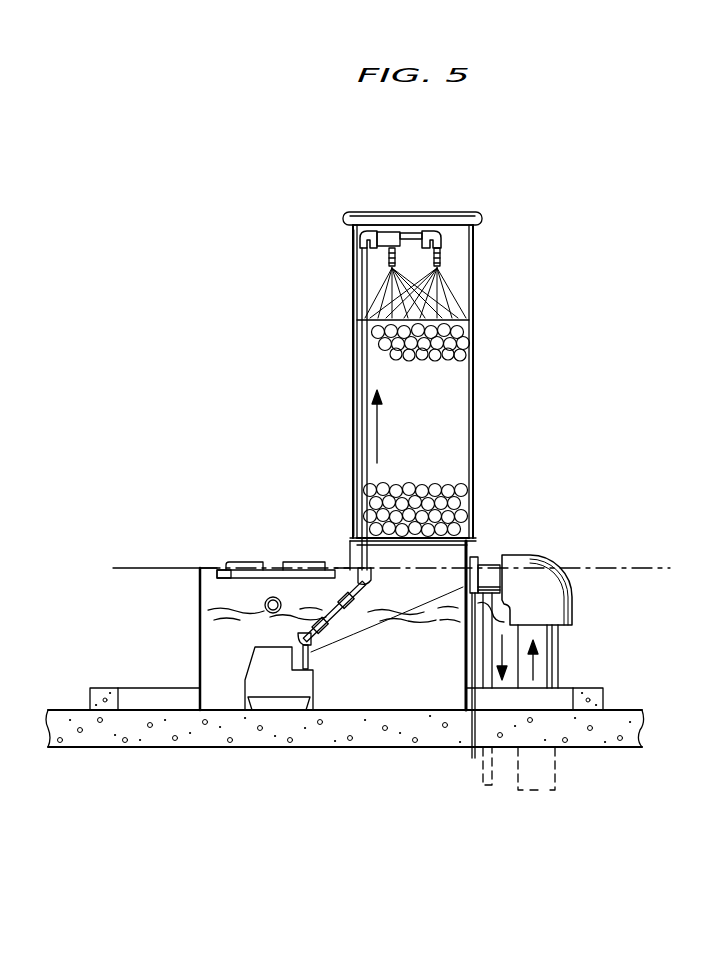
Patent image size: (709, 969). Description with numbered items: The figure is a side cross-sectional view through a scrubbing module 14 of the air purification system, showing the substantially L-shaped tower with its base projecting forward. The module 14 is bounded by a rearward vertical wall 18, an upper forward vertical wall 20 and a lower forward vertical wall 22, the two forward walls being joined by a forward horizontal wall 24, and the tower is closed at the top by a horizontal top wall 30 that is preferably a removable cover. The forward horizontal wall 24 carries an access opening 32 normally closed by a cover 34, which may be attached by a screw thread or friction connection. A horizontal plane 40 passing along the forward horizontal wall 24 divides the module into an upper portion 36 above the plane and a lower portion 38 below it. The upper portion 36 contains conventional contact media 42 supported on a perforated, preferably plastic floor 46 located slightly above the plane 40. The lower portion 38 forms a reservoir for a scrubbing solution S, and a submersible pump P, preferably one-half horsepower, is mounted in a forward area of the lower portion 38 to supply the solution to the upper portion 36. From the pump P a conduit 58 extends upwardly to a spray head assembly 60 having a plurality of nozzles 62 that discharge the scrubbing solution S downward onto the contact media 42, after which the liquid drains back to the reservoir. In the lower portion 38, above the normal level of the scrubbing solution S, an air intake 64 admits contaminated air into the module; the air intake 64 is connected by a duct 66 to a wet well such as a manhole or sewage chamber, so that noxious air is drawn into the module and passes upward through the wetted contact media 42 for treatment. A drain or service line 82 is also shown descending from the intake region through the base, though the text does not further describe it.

The intermediate module 14 is at (350, 203).
The rearward vertical wall 18 is at (473, 400).
The upper forward vertical wall 20 is at (352, 358).
The lower forward vertical wall 22 is at (199, 600).
The forward horizontal wall 24 is at (208, 565).
The horizontal top wall 30 is at (430, 212).
The access opening 32 is at (335, 566).
The cover 34 is at (267, 570).
The upper portion 36 is at (541, 494).
The lower portion 38 is at (590, 614).
The horizontal plane 40 is at (603, 566).
The contact media 42 is at (464, 345).
The perforated floor 46 is at (388, 541).
The conduit 58 is at (368, 475).
The spray head assembly 60 is at (446, 238).
The nozzles 62 is at (386, 257).
The air intake 64 is at (471, 554).
The duct 66 is at (559, 650).
The drain pipe 82 is at (490, 645).
The scrubbing solution S is at (232, 612).
The submersible pump P is at (296, 689).